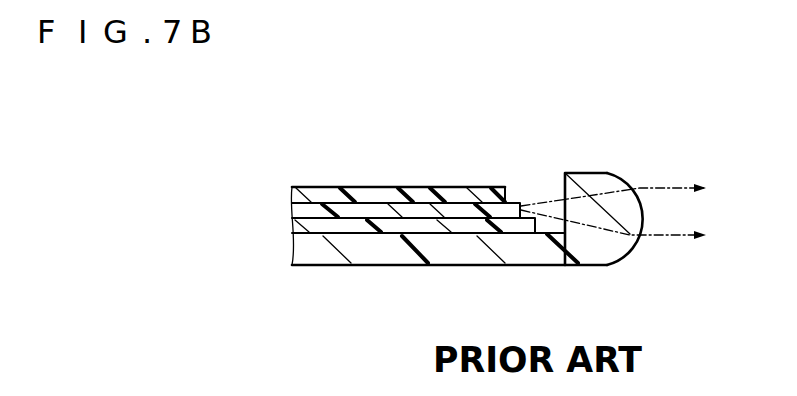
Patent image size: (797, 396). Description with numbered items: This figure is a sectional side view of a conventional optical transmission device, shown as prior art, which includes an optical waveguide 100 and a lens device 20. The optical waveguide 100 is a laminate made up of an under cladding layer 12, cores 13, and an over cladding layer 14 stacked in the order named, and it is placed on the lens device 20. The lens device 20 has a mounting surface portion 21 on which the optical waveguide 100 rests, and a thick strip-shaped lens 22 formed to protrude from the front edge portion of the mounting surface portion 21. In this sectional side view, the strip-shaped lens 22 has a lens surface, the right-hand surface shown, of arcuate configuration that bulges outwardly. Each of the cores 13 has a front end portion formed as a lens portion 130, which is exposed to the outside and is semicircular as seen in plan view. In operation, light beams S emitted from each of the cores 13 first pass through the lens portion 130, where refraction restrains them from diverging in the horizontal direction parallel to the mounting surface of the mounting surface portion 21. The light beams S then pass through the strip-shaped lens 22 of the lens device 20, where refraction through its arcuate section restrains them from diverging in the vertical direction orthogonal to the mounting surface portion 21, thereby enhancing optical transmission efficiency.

The optical waveguide 100 is at (548, 101).
The over cladding layer 14 is at (325, 193).
The cores 13 is at (384, 210).
The under cladding layer 12 is at (455, 223).
The lens portion 130 is at (516, 202).
The lens device 20 is at (657, 101).
The mounting surface portion 21 is at (515, 250).
The strip-shaped lens 22 is at (607, 177).
The light beams S is at (668, 188).